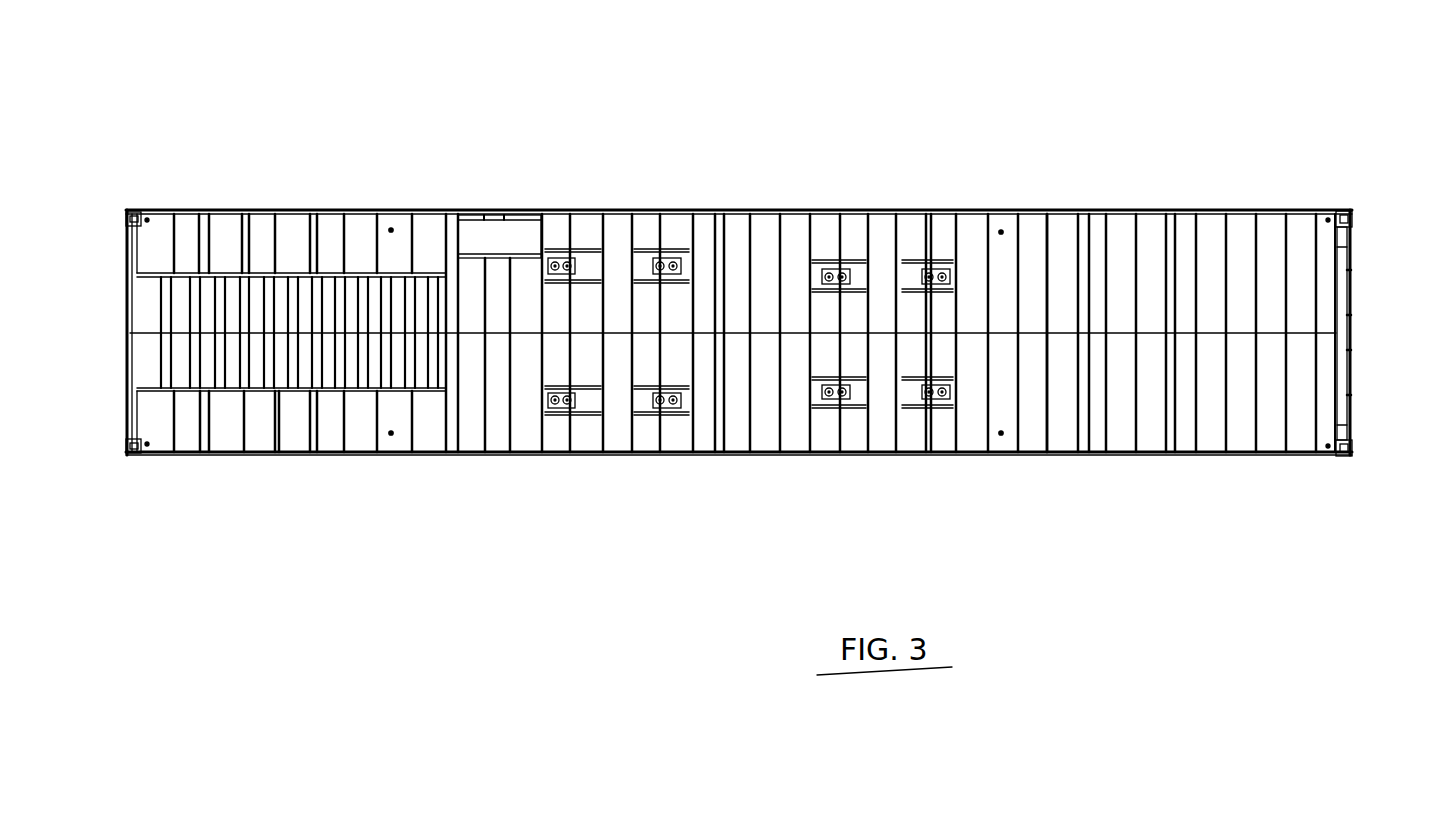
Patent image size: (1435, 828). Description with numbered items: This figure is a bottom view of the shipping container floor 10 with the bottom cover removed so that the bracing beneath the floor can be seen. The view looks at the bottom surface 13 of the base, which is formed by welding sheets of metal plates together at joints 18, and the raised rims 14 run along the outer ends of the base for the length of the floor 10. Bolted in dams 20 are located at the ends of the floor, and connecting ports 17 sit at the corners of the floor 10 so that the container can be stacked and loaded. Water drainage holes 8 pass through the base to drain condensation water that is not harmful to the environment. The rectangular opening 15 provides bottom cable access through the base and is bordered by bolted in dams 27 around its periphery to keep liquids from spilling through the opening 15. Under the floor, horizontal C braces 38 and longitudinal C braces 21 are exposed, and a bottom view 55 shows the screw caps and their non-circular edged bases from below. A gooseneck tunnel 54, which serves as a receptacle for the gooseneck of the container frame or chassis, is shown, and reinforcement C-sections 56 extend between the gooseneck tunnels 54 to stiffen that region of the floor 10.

The floor 10 is at (497, 78).
The water drainage holes 8 is at (405, 225).
The bottom surface 13 is at (773, 226).
The rims 14 is at (450, 455).
The rectangular opening 15 is at (503, 243).
The connecting ports 17 is at (121, 467).
The joints 18 is at (1060, 330).
The bolted in dams 20 is at (127, 343).
The longitudinal C braces 21 is at (855, 265).
The bolted in dams 27 is at (478, 238).
The horizontal C braces 38 is at (521, 432).
The gooseneck tunnel 54 is at (263, 278).
The bottom view of screw caps and non-circular edged bases 55 is at (594, 262).
The reinforcement C-sections 56 is at (352, 362).